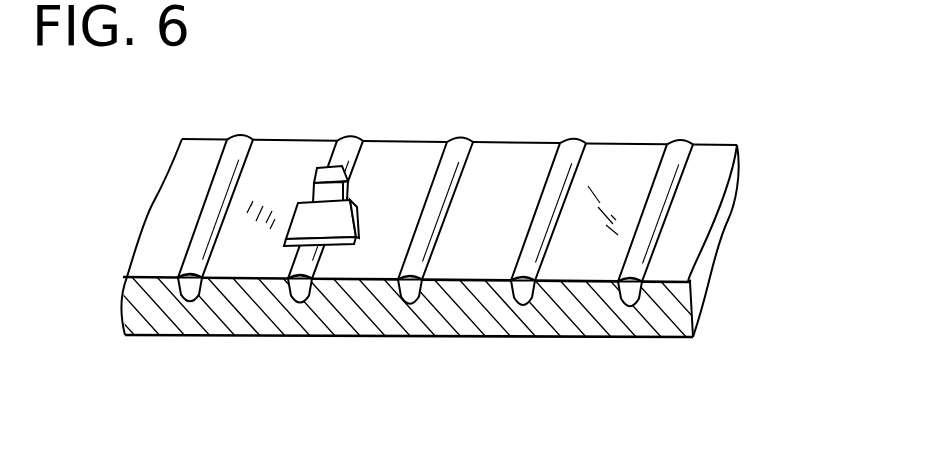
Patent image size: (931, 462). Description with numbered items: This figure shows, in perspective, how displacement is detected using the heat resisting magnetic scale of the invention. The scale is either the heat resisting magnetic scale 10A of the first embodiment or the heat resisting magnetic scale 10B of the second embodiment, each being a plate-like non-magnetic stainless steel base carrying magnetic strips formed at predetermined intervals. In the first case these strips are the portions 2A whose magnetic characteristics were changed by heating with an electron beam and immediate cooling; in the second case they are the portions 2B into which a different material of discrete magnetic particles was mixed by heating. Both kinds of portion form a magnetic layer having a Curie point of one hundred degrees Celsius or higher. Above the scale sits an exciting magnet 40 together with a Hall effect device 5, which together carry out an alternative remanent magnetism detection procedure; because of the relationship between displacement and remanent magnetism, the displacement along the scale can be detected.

The portion 2A is at (465, 183).
The portion 2B is at (676, 138).
The Hall effect device 5 is at (332, 222).
The heat resisting magnetic scale 10A is at (397, 298).
The heat resisting magnetic scale 10B is at (559, 348).
The exciting magnet 40 is at (322, 166).